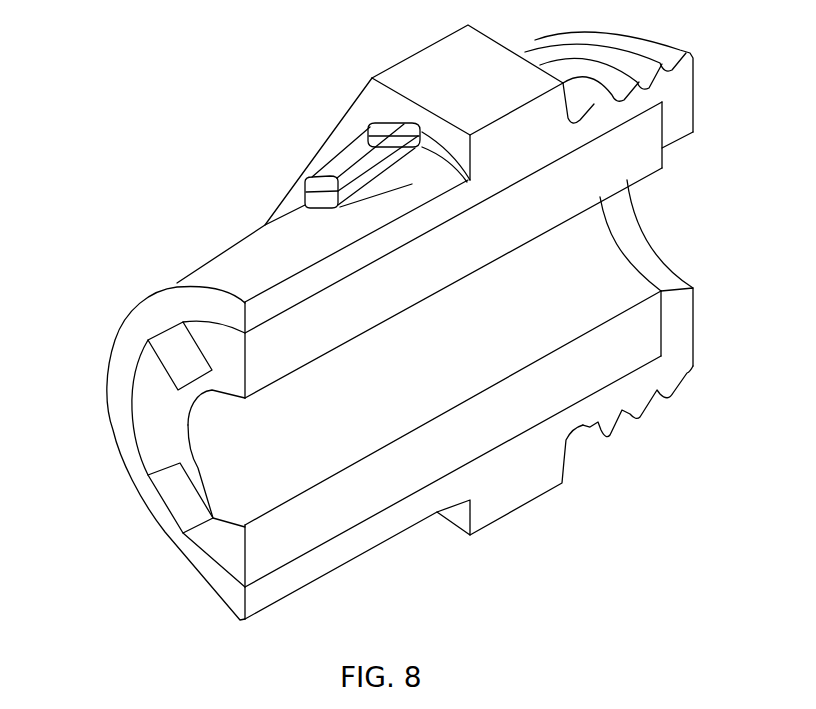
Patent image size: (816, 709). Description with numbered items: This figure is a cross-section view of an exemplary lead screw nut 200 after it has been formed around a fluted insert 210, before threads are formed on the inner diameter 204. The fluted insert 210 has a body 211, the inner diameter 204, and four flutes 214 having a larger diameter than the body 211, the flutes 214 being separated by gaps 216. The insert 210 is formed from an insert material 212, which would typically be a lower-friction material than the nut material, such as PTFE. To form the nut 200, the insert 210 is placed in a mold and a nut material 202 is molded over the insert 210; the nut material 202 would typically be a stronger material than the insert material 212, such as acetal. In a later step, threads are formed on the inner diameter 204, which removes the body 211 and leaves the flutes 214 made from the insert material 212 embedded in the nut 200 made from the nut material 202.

The lead screw nut 200 is at (148, 156).
The nut material 202 is at (680, 80).
The inner diameter 204 is at (218, 447).
The fluted insert 210 is at (164, 329).
The body 211 is at (185, 399).
The insert material 212 is at (612, 177).
The flutes 214 is at (218, 549).
The gaps 216 is at (160, 516).